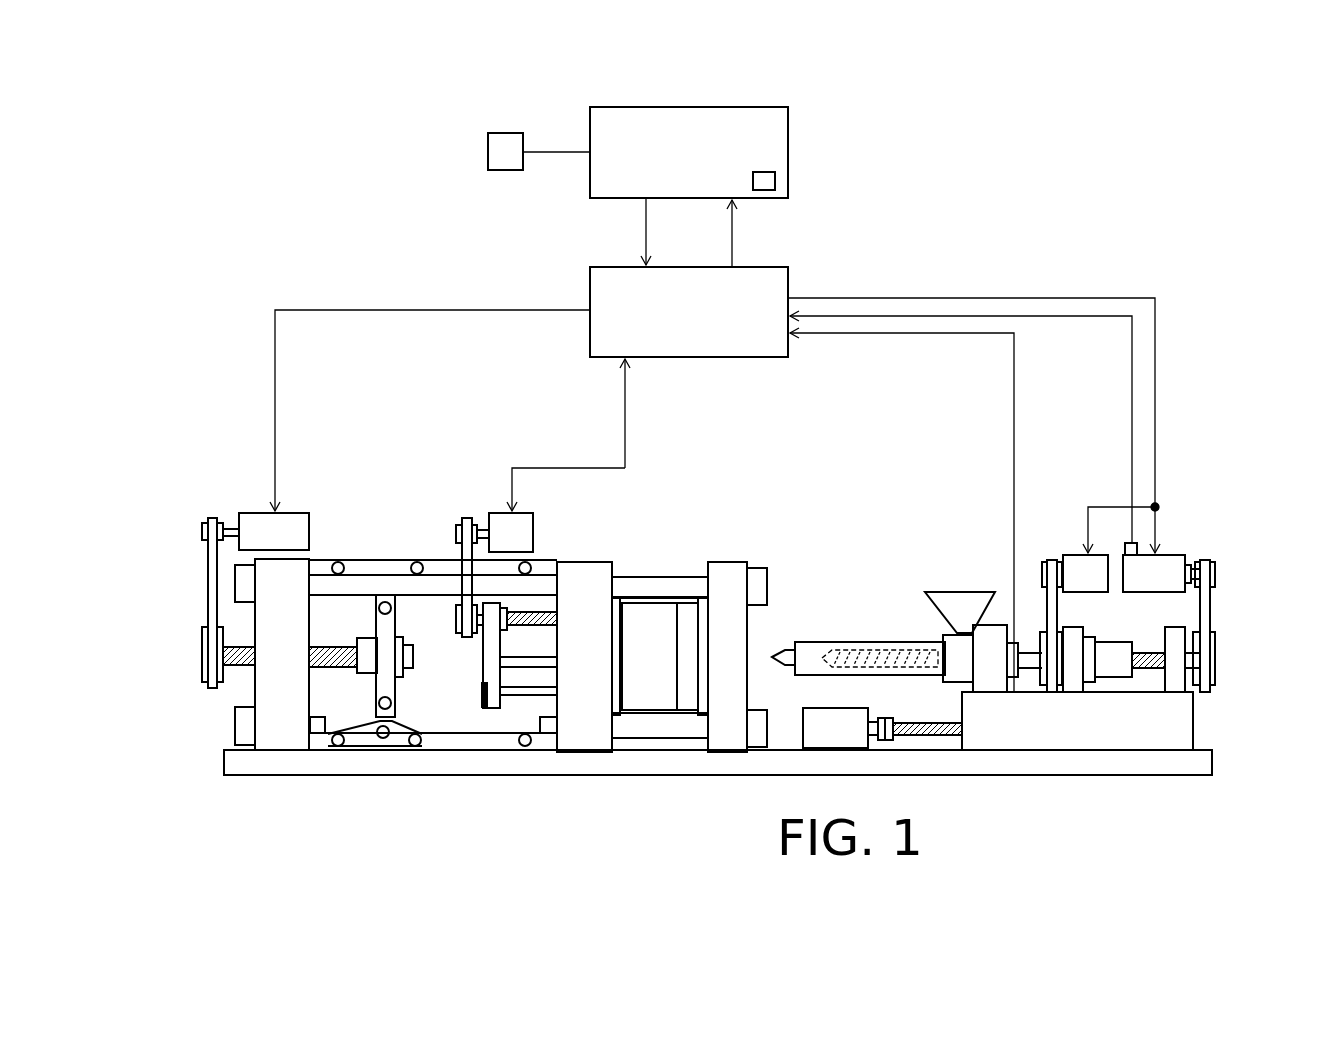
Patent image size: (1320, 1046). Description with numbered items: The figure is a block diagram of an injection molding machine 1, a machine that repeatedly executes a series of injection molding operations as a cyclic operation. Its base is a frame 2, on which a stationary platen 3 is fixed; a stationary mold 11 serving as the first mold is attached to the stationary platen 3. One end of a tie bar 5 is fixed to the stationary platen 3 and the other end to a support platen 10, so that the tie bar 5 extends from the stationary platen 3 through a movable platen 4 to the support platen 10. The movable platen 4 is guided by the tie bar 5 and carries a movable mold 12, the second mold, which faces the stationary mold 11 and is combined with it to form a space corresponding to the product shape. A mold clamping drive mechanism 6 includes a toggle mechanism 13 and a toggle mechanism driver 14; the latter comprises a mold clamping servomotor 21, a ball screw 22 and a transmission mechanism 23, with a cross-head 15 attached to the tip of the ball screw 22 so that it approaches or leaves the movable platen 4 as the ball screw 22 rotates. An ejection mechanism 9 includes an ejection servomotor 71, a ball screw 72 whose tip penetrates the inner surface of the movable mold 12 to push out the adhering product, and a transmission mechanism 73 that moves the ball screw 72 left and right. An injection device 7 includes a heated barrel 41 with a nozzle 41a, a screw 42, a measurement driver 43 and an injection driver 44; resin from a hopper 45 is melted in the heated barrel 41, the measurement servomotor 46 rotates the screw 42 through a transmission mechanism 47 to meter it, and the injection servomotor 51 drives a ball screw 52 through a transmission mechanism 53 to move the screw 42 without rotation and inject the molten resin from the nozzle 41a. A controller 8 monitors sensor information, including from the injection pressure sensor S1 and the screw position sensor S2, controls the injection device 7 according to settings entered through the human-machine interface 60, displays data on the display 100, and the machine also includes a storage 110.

The injection molding machine 1 is at (944, 160).
The frame 2 is at (702, 776).
The stationary platen 3 is at (730, 573).
The movable platen 4 is at (590, 578).
The tie bar 5 is at (437, 585).
The mold clamping drive mechanism 6 is at (349, 617).
The injection device 7 is at (1031, 627).
The controller 8 is at (788, 282).
The ejection mechanism 9 is at (489, 570).
The support platen 10 is at (278, 736).
The stationary mold 11 is at (690, 605).
The movable mold 12 is at (633, 605).
The toggle mechanism 13 is at (413, 680).
The toggle mechanism driver 14 is at (202, 517).
The cross-head 15 is at (390, 616).
The mold clamping servomotor 21 is at (292, 522).
The ball screw 22 is at (240, 670).
The transmission mechanism 23 is at (206, 598).
The heated barrel 41 is at (890, 640).
The nozzle 41a is at (780, 648).
The screw 42 is at (865, 675).
The measurement driver 43 is at (1055, 545).
The injection driver 44 is at (1196, 545).
The hopper 45 is at (960, 600).
The measurement servomotor 46 is at (1088, 552).
The transmission mechanism 47 is at (1045, 598).
The injection servomotor 51 is at (1165, 553).
The ball screw 52 is at (1147, 700).
The transmission mechanism 53 is at (1216, 597).
The human-machine interface 60 is at (788, 138).
The ejection servomotor 71 is at (520, 532).
The ball screw 72 is at (528, 628).
The transmission mechanism 73 is at (462, 517).
The display 100 is at (775, 181).
The storage 110 is at (486, 152).
The injection pressure sensor S1 is at (1014, 694).
The screw position sensor S2 is at (1122, 556).